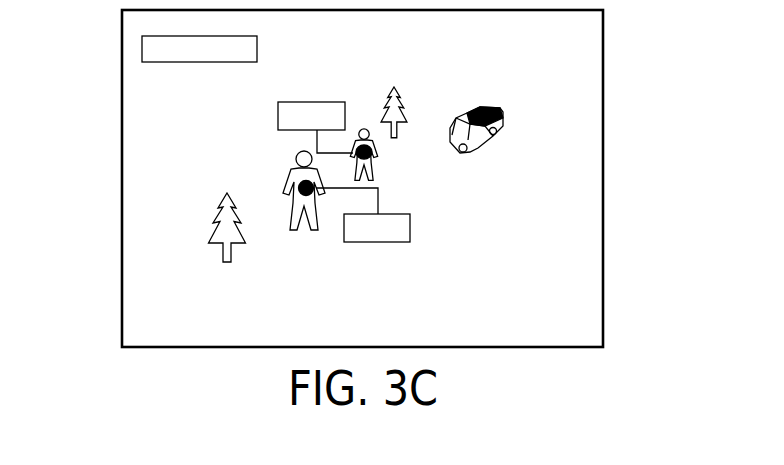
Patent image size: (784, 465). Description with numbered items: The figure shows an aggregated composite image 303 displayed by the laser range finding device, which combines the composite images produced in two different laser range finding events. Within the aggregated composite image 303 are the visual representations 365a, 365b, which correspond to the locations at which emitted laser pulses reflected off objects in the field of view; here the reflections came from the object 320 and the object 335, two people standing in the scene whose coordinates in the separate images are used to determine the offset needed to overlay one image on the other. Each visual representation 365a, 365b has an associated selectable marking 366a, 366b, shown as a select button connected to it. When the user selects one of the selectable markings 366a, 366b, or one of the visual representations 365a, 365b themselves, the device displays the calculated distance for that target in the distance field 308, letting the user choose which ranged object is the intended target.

The aggregated composite image 303 is at (640, 39).
The distance indicator 308 is at (142, 57).
The object 320 is at (296, 157).
The object 335 is at (375, 176).
The visual representation 365a is at (298, 218).
The visual representation 365b is at (372, 157).
The selectable marking 366a is at (387, 242).
The selectable marking 366b is at (312, 102).